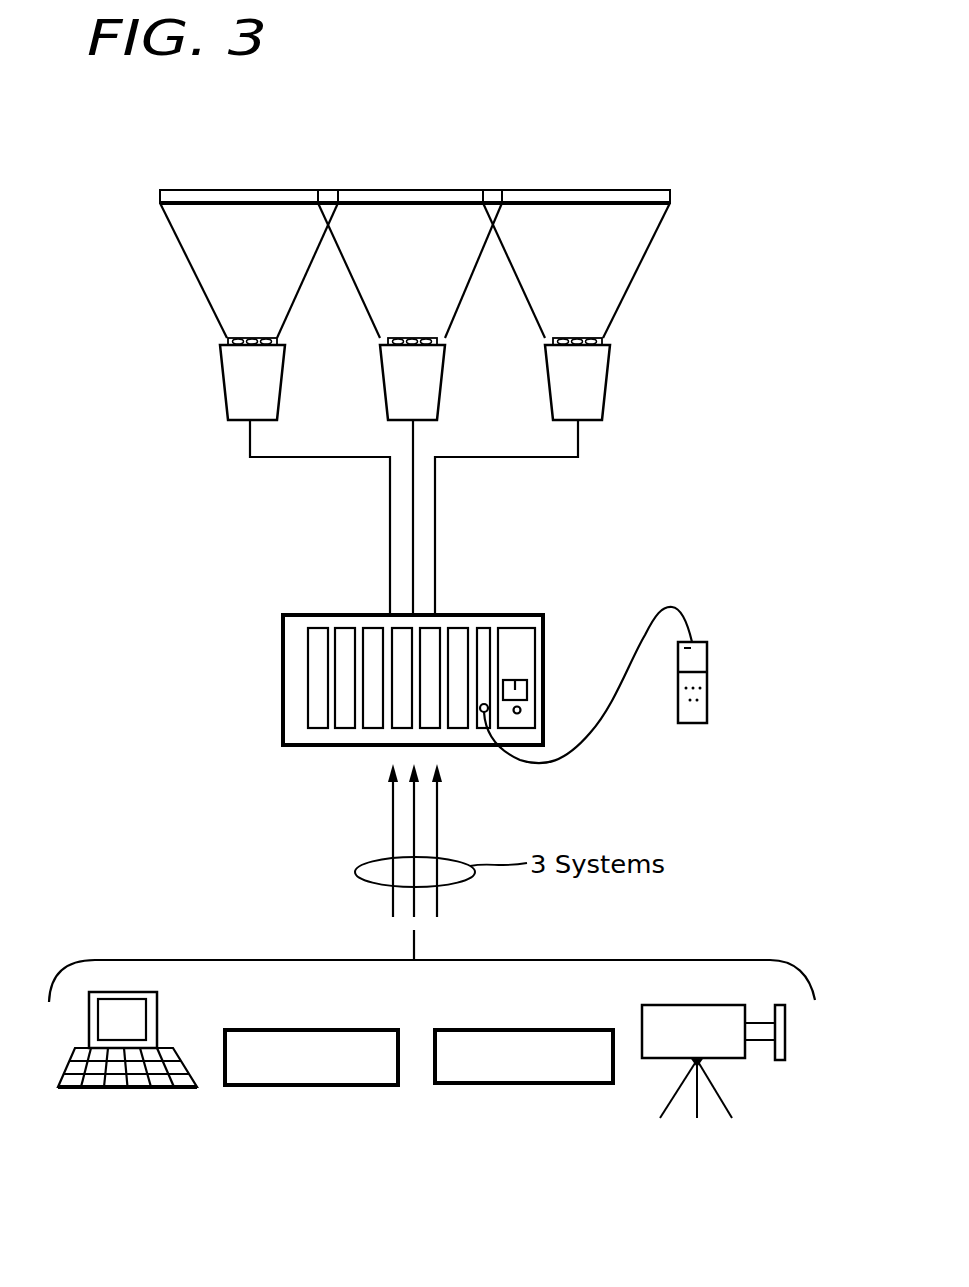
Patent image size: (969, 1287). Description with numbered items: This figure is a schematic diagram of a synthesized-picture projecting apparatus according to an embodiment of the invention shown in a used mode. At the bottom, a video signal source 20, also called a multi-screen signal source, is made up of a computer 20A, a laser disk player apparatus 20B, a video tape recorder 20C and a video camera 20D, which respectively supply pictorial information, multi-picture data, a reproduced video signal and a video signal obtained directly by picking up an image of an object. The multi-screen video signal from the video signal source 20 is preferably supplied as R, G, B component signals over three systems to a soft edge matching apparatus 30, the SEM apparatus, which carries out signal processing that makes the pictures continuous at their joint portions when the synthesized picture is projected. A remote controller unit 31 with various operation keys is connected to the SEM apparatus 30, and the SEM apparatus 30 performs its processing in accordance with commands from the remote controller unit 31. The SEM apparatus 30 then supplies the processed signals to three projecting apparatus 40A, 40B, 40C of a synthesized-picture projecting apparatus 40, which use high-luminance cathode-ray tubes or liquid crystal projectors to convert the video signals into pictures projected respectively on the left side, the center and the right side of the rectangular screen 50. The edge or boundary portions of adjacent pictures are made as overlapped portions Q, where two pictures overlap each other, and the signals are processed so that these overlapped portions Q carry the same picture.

The screen 50 is at (650, 190).
The overlapped portions Q is at (327, 190).
The synthesized-picture projecting apparatus 40 is at (73, 419).
The projecting apparatus 40A is at (222, 405).
The projecting apparatus 40B is at (441, 405).
The projecting apparatus 40C is at (605, 405).
The soft edge matching apparatus 30 is at (283, 712).
The remote controller unit 31 is at (707, 695).
The video signal source 20 is at (780, 960).
The computer 20A is at (115, 1090).
The laser disk player apparatus 20B is at (265, 1030).
The video tape recorder 20C is at (480, 1030).
The video camera 20D is at (738, 1060).